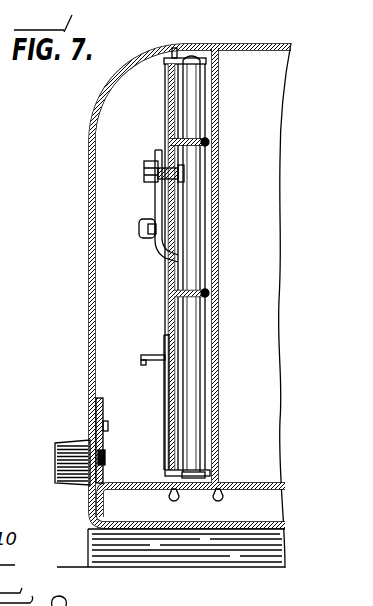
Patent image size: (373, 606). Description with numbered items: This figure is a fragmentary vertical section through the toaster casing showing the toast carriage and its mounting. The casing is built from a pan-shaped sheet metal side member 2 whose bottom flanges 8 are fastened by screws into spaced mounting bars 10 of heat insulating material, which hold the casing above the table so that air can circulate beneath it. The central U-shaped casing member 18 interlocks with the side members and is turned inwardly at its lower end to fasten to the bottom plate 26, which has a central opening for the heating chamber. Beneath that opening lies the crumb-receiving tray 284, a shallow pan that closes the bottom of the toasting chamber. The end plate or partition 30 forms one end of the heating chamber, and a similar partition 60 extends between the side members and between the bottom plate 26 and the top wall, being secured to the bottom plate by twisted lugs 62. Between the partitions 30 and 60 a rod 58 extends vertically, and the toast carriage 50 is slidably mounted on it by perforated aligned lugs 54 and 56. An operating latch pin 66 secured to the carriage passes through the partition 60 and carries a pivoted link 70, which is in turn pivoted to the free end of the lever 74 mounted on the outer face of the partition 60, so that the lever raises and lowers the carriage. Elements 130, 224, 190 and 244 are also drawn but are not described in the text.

The central casing member 18 is at (90, 230).
The crumb-receiving tray 284 is at (236, 527).
The bottom plate 26 is at (248, 482).
The mounting bars 10 is at (127, 561).
The end plate or partition 30 is at (218, 422).
The toast carriage 50 is at (203, 133).
The rod 58 is at (193, 211).
The perforated lug 54 is at (209, 143).
The perforated lug 56 is at (205, 292).
The operating latch pin 66 is at (158, 161).
The link 70 is at (162, 203).
The lever 74 is at (154, 262).
The partition 60 is at (170, 417).
The bracket 130 is at (143, 365).
The side plate 224 is at (101, 389).
The twisted lugs 62 is at (170, 495).
The brush block 244 is at (60, 480).
The adjacent element 190 is at (166, 597).
The side member 2 is at (0, 218).
The bottom flanges 8 is at (5, 505).